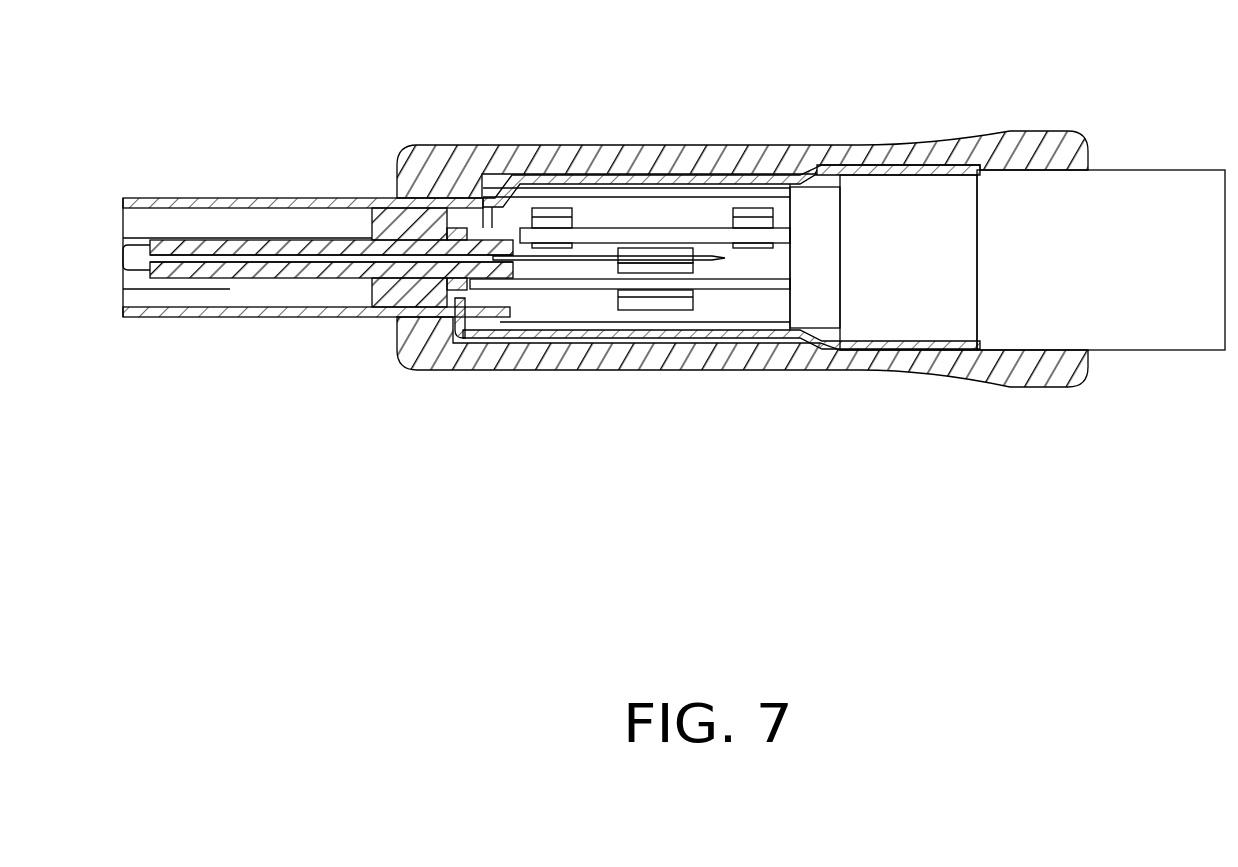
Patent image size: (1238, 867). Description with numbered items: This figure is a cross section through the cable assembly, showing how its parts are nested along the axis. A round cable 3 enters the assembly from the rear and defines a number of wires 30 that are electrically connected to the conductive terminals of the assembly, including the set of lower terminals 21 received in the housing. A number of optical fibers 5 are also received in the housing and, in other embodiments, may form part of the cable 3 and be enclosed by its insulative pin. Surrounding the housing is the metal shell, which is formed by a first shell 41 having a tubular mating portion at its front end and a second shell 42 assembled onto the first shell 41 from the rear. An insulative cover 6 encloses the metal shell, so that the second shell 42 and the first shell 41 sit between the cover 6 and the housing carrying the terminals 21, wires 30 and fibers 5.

The round cable 3 is at (1088, 208).
The optical fibers 5 is at (255, 259).
The insulative cover 6 is at (575, 163).
The lower terminals 21 is at (300, 238).
The wires 30 is at (653, 233).
The first shell 41 is at (373, 200).
The second shell 42 is at (587, 337).